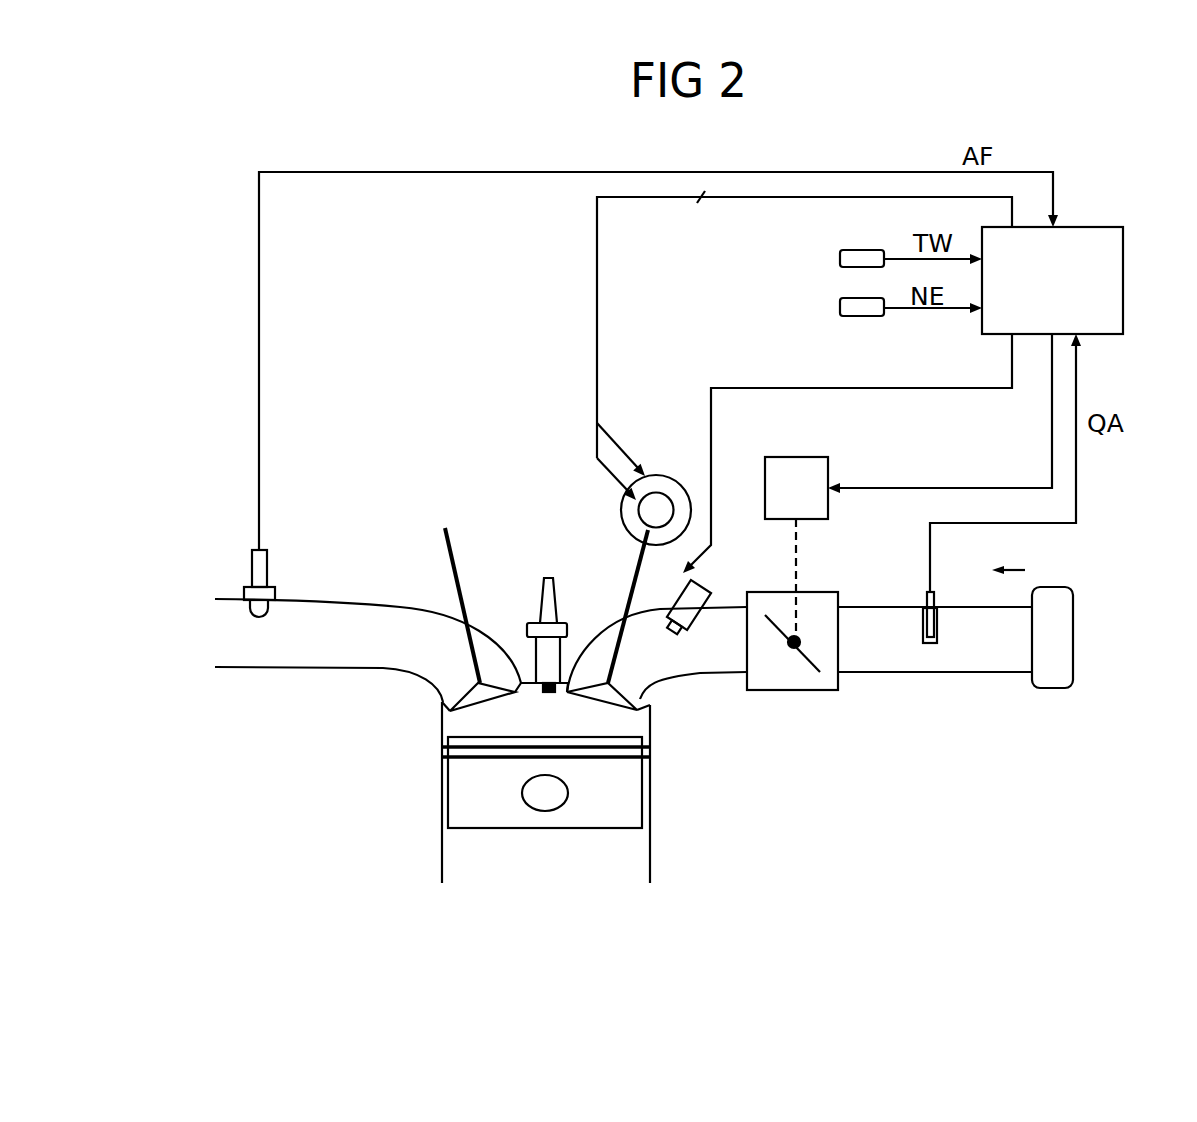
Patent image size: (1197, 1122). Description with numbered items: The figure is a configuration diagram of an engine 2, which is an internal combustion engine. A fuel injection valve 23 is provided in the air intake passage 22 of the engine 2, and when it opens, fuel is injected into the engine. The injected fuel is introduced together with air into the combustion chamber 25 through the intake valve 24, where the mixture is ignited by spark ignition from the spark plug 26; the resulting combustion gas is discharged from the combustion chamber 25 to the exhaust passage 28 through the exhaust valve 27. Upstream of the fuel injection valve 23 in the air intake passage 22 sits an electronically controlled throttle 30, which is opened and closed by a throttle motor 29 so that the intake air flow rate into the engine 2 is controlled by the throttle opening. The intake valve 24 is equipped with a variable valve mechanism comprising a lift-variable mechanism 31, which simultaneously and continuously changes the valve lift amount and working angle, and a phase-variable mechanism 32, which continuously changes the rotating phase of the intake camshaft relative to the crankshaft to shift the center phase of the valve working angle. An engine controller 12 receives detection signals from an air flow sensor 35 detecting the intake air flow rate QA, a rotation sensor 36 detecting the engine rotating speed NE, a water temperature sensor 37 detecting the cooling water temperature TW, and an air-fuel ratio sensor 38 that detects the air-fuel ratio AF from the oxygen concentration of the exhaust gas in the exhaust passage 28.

The engine 2 is at (464, 458).
The engine controller 12 is at (1123, 328).
The air intake passage 22 is at (648, 668).
The fuel injection valve 23 is at (687, 622).
The intake valve 24 is at (592, 693).
The combustion chamber 25 is at (472, 720).
The spark plug 26 is at (543, 610).
The exhaust valve 27 is at (473, 690).
The exhaust passage 28 is at (377, 607).
The throttle motor 29 is at (810, 457).
The electronically controlled throttle 30 is at (810, 672).
The lift-variable mechanism 31 is at (657, 477).
The phase-variable mechanism 32 is at (662, 512).
The air flow sensor 35 is at (920, 625).
The rotation sensor 36 is at (867, 310).
The water temperature sensor 37 is at (840, 257).
The air-fuel ratio sensor 38 is at (250, 590).